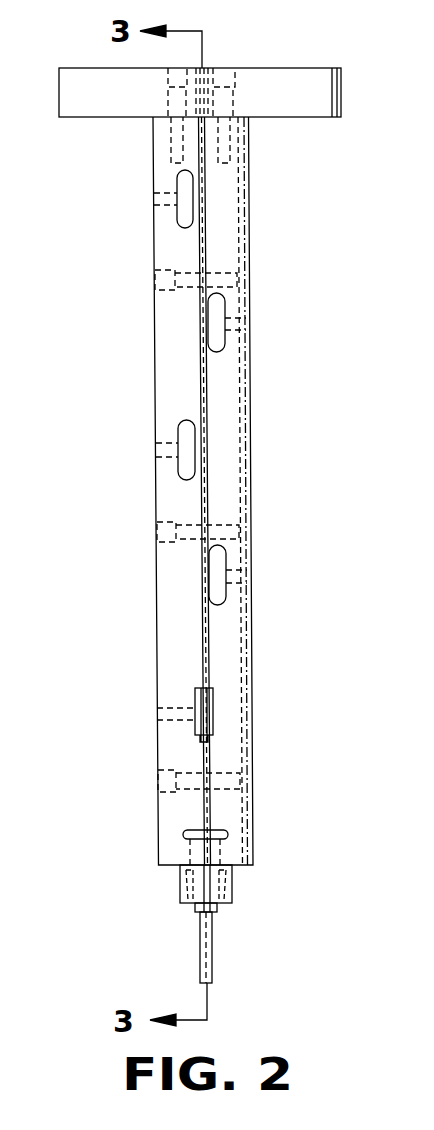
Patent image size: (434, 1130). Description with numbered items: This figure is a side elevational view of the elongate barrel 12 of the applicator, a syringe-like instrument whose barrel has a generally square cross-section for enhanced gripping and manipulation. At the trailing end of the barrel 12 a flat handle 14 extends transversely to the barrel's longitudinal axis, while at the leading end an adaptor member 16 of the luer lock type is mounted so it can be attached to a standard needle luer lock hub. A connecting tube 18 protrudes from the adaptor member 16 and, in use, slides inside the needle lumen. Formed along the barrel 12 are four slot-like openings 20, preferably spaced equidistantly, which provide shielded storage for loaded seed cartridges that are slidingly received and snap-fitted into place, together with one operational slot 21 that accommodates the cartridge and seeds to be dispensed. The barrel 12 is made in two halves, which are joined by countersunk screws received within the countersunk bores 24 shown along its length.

The elongate barrel 12 is at (248, 418).
The flat handle 14 is at (297, 118).
The adaptor member 16 is at (180, 887).
The connecting tube 18 is at (212, 940).
The slot-like openings 20 is at (177, 178).
The operational slot 21 is at (195, 695).
The countersunk bores 24 is at (185, 272).